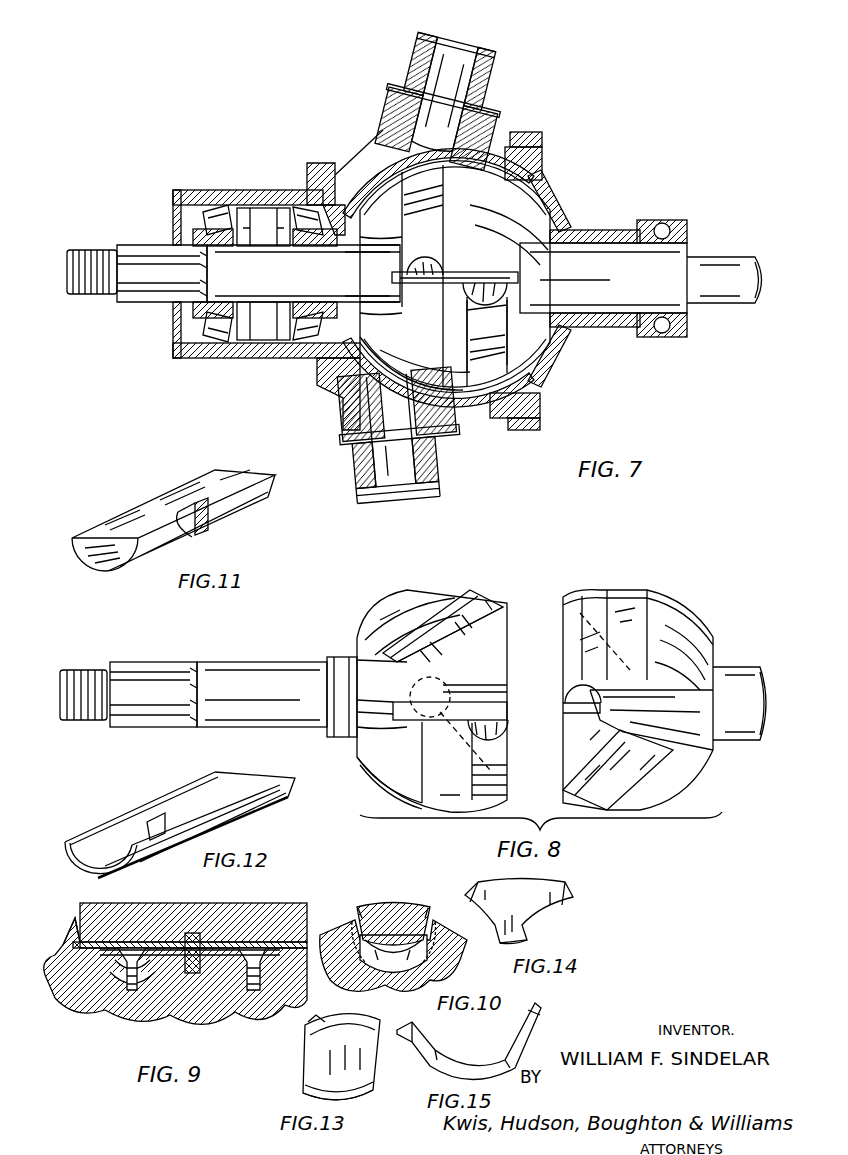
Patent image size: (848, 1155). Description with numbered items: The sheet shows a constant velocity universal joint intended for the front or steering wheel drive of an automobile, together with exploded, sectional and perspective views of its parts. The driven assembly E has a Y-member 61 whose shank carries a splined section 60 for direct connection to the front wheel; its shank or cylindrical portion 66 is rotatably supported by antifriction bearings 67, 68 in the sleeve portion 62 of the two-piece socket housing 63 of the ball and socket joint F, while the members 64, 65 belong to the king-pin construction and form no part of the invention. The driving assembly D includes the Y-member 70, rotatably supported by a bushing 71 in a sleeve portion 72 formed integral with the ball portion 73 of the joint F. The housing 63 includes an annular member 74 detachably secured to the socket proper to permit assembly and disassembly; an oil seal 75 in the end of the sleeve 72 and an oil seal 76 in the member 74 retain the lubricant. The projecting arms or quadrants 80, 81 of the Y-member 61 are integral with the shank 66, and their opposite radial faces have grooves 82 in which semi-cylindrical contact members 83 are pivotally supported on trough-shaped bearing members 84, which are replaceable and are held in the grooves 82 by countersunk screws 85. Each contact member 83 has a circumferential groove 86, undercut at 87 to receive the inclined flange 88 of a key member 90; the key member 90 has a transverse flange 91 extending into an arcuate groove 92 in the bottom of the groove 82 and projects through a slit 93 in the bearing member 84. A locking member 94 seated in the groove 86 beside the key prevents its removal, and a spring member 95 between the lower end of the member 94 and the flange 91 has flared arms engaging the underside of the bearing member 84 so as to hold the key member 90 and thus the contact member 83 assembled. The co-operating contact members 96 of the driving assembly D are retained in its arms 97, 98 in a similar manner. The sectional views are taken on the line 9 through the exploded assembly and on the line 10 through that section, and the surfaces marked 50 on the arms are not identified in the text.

In FIG. 7, the splined section 60 is at (150, 296).
In FIG. 8, the splined section 60 is at (143, 675).
In FIG. 7, the Y-member 61 is at (360, 305).
In FIG. 8, the Y-member 61 is at (284, 683).
In FIG. 7, the sleeve portion 62 is at (235, 345).
In FIG. 7, the socket housing 63 is at (358, 173).
In FIG. 7, the king-pin member 64 is at (473, 93).
In FIG. 7, the king-pin member 65 is at (437, 475).
In FIG. 7, the shank portion 66 is at (265, 272).
In FIG. 8, the shank portion 66 is at (232, 645).
In FIG. 7, the antifriction bearing 67 is at (223, 200).
In FIG. 7, the antifriction bearing 68 is at (310, 195).
In FIG. 7, the Y-member 70 is at (585, 300).
In FIG. 7, the bushing 71 is at (617, 330).
In FIG. 7, the sleeve portion 72 is at (617, 230).
In FIG. 8, the sleeve portion 72 is at (503, 713).
In FIG. 7, the ball portion 73 is at (557, 197).
In FIG. 7, the annular member 74 is at (543, 377).
In FIG. 7, the oil seal 75 is at (663, 220).
In FIG. 7, the oil seal 76 is at (495, 418).
In FIG. 7, the projecting arm 80 is at (373, 238).
In FIG. 8, the projecting arm 80 is at (372, 622).
In FIG. 9, the projecting arm 80 is at (125, 1010).
In FIG. 10, the projecting arm 80 is at (382, 983).
In FIG. 7, the projecting arm 81 is at (450, 333).
In FIG. 8, the projecting arm 81 is at (387, 785).
In FIG. 8, the groove 82 is at (473, 638).
In FIG. 9, the groove 82 is at (75, 960).
In FIG. 7, the semi-cylindrical contact member 83 is at (483, 286).
In FIG. 11, the semi-cylindrical contact member 83 is at (105, 525).
In FIG. 8, the semi-cylindrical contact member 83 is at (493, 605).
In FIG. 9, the semi-cylindrical contact member 83 is at (277, 917).
In FIG. 10, the semi-cylindrical contact member 83 is at (388, 907).
In FIG. 7, the bearing member 84 is at (510, 290).
In FIG. 12, the bearing member 84 is at (85, 838).
In FIG. 9, the bearing member 84 is at (130, 945).
In FIG. 9, the screw 85 is at (118, 980).
In FIG. 11, the circumferential groove 86 is at (213, 523).
In FIG. 10, the circumferential groove 86 is at (362, 910).
In FIG. 11, the undercut 87 is at (178, 520).
In FIG. 13, the inclined flange 88 is at (316, 1030).
In FIG. 9, the key member 90 is at (132, 990).
In FIG. 13, the key member 90 is at (303, 1065).
In FIG. 13, the transverse flange 91 is at (300, 1088).
In FIG. 9, the arcuately-shaped groove 92 is at (190, 975).
In FIG. 10, the arcuately-shaped groove 92 is at (340, 933).
In FIG. 12, the slit 93 is at (157, 820).
In FIG. 9, the locking member 94 is at (214, 950).
In FIG. 14, the locking member 94 is at (548, 920).
In FIG. 9, the spring member 95 is at (215, 990).
In FIG. 15, the spring member 95 is at (473, 1062).
In FIG. 7, the contact member 96 is at (428, 270).
In FIG. 8, the contact member 96 is at (567, 697).
In FIG. 8, the arm 97 is at (655, 600).
In FIG. 8, the arm 98 is at (653, 800).
In FIG. 8, the section line 9 is at (515, 572).
In FIG. 9, the section line 10 is at (200, 903).
In FIG. 8, the spherical surface 50 is at (430, 610).
In FIG. 7, the driving assembly D is at (599, 224).
In FIG. 8, the driving assembly D is at (703, 610).
In FIG. 7, the driven assembly E is at (274, 298).
In FIG. 8, the driven assembly E is at (281, 738).
In FIG. 7, the ball and socket joint F is at (540, 170).